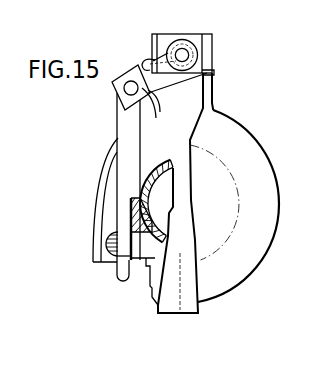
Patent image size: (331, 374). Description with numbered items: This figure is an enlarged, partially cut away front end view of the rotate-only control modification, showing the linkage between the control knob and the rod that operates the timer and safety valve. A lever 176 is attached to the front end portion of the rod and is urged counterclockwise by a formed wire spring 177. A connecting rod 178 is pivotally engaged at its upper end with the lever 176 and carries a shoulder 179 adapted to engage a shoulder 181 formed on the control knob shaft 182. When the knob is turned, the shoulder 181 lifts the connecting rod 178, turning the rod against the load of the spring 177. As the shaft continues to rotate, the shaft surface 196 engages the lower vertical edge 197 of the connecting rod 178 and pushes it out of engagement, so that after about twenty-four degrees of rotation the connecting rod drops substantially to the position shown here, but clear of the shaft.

The lever 176 is at (141, 62).
The formed wire spring 177 is at (214, 72).
The connecting rod 178 is at (127, 117).
The shoulder 179 is at (127, 227).
The shoulder 181 is at (135, 196).
The control knob shaft 182 is at (162, 167).
The shaft surface 196 is at (135, 251).
The lower vertical edge 197 is at (130, 268).